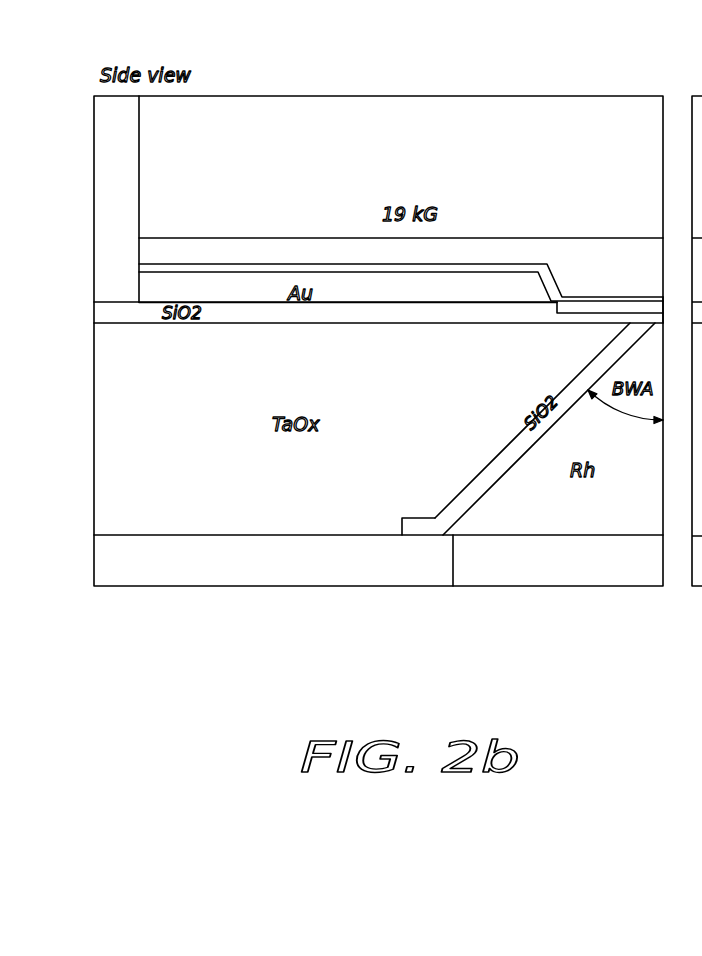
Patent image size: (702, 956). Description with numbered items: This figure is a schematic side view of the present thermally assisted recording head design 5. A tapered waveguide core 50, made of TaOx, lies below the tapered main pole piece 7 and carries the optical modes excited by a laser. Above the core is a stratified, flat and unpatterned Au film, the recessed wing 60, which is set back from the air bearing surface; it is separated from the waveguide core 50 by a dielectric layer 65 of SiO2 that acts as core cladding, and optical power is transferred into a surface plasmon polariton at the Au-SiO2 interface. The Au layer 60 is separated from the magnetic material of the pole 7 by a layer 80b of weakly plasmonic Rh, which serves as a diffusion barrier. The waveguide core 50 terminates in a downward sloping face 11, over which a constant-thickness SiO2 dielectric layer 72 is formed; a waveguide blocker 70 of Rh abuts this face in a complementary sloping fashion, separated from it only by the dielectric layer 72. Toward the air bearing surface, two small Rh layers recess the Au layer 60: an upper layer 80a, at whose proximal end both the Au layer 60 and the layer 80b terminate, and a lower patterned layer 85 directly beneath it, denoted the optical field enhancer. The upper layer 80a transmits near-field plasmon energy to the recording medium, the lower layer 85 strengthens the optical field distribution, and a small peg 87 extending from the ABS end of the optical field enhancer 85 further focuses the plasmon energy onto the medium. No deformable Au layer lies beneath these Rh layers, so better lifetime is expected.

The main pole layer (19 kG) 5 is at (569, 117).
The main pole piece 7 is at (568, 252).
The downward sloping face 11 is at (457, 494).
The waveguide core 50 is at (337, 518).
The stratified Au layer 60 is at (267, 282).
The dielectric layer 65 is at (360, 313).
The waveguide blocker 70 is at (488, 518).
The dielectric layer 72 is at (570, 387).
The upper layer 80a is at (550, 300).
The layer of weakly plasmonic material 80b is at (343, 270).
The lower layer 85 is at (638, 312).
The peg 87 is at (665, 308).